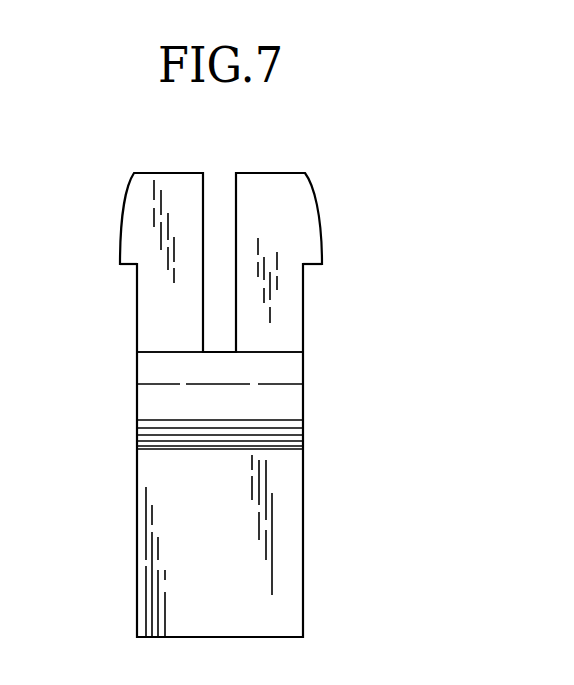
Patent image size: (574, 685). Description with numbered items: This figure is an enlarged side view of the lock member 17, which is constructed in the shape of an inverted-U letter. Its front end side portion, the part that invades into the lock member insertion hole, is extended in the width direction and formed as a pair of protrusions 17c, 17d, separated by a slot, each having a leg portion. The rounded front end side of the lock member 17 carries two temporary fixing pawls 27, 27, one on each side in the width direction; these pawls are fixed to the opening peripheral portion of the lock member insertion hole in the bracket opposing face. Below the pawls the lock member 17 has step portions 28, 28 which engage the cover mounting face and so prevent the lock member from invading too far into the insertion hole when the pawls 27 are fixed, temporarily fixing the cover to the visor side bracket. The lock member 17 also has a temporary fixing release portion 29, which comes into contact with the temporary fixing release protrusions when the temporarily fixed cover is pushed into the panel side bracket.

The lock member 17 is at (339, 182).
The protrusion 17c is at (167, 180).
The protrusion 17d is at (267, 180).
The temporary fixing pawl 27 is at (130, 268).
The step portion 28 is at (162, 353).
The temporary fixing release portion 29 is at (293, 324).